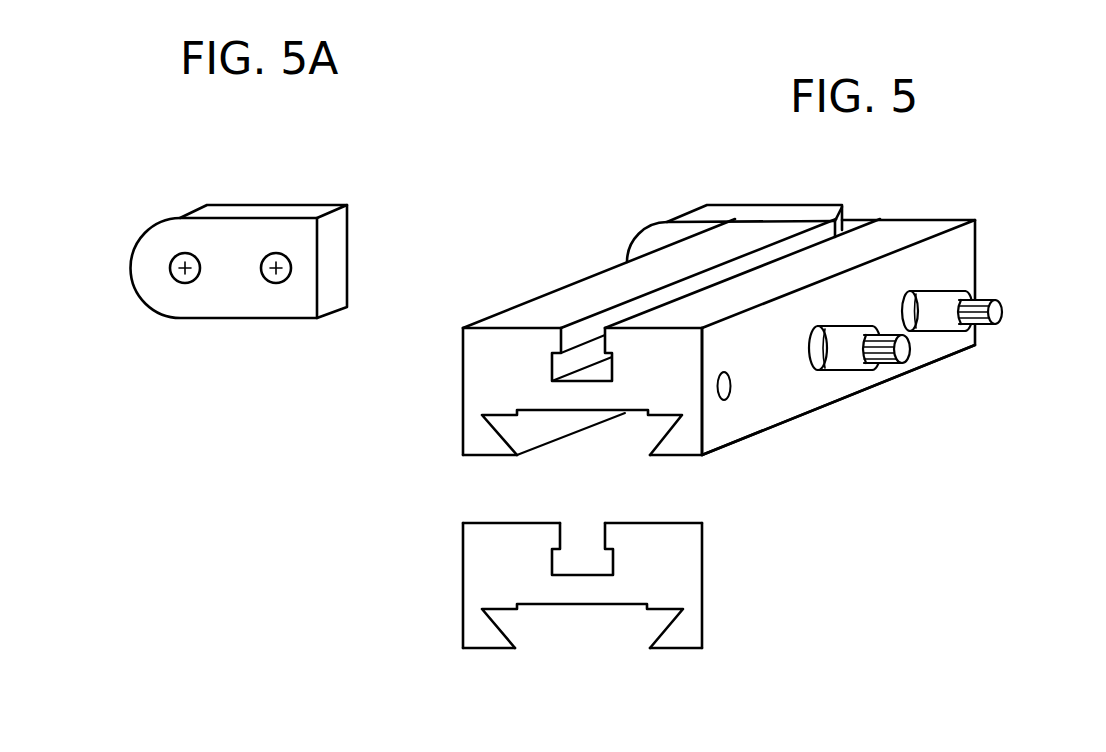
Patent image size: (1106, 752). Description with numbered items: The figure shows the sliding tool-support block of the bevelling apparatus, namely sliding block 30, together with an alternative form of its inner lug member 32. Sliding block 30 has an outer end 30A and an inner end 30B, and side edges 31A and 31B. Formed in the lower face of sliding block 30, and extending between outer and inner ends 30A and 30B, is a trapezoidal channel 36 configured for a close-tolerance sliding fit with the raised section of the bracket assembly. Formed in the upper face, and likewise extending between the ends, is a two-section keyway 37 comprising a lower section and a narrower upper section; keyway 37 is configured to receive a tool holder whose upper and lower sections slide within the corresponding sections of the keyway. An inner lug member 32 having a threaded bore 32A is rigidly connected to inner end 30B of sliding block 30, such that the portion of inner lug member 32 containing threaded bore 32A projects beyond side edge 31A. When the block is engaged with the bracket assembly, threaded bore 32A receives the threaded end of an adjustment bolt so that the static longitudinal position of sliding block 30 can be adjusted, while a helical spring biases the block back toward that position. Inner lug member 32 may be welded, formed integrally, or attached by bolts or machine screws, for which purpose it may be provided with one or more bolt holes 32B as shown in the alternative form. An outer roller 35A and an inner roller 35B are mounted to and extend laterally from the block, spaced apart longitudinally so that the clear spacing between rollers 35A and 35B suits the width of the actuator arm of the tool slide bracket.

In FIG. 5, the sliding block 30 is at (541, 296).
In FIG. 5, the outer end 30A is at (445, 392).
In FIG. 5, the inner end 30B is at (933, 206).
In FIG. 5, the side edge 31A is at (596, 248).
In FIG. 5, the side edge 31B is at (755, 402).
In FIG. 5A, the inner lug member 32 is at (325, 204).
In FIG. 5, the inner lug member 32 is at (652, 221).
In FIG. 5A, the threaded bore 32A is at (178, 254).
In FIG. 5A, the bolt holes 32B is at (273, 253).
In FIG. 5, the outer roller 35A is at (862, 372).
In FIG. 5, the inner roller 35B is at (943, 322).
In FIG. 5, the trapezoidal channel 36 is at (660, 423).
In FIG. 5, the two-section keyway 37 is at (568, 363).